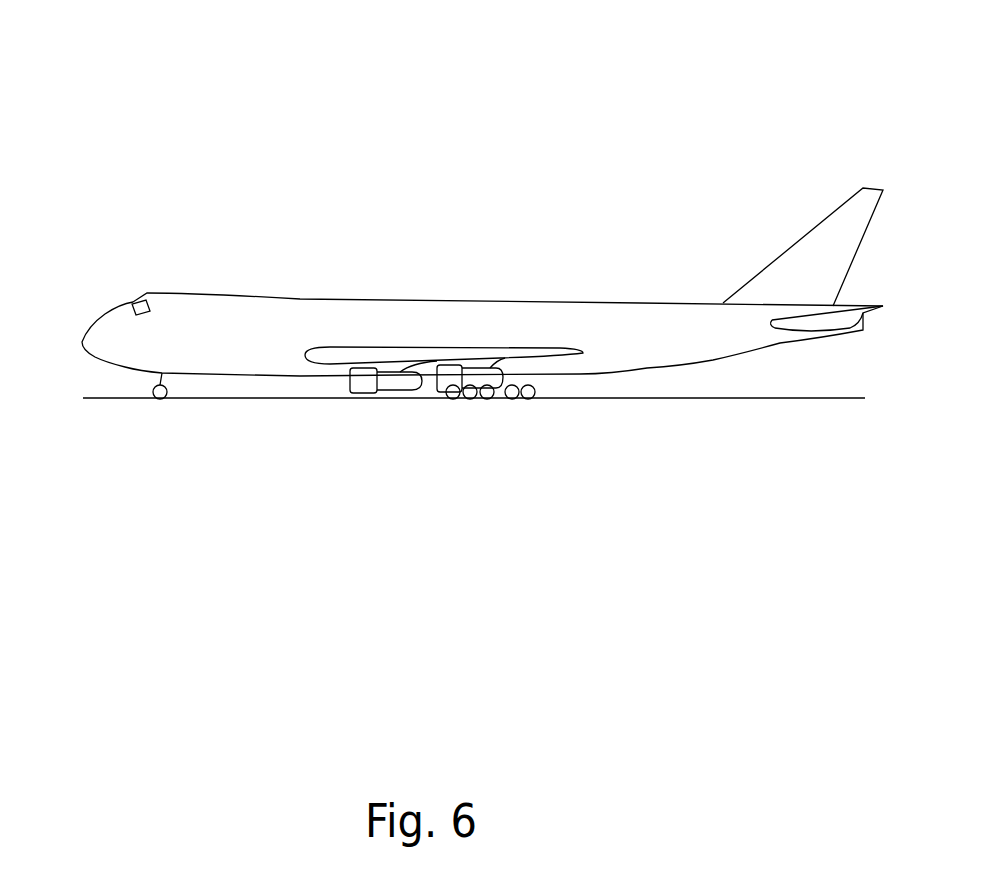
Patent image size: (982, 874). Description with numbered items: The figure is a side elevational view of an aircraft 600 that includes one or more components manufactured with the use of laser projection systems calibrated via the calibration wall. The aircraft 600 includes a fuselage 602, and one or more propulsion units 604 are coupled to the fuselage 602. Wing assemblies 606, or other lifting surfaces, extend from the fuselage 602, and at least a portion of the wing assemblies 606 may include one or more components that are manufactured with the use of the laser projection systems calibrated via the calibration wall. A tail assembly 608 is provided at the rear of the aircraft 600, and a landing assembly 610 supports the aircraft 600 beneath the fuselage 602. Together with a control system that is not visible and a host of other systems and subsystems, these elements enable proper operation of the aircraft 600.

The aircraft 600 is at (183, 110).
The fuselage 602 is at (505, 303).
The propulsion units 604 is at (362, 378).
The wing assemblies 606 is at (333, 352).
The tail assembly 608 is at (800, 260).
The landing assembly 610 is at (490, 392).